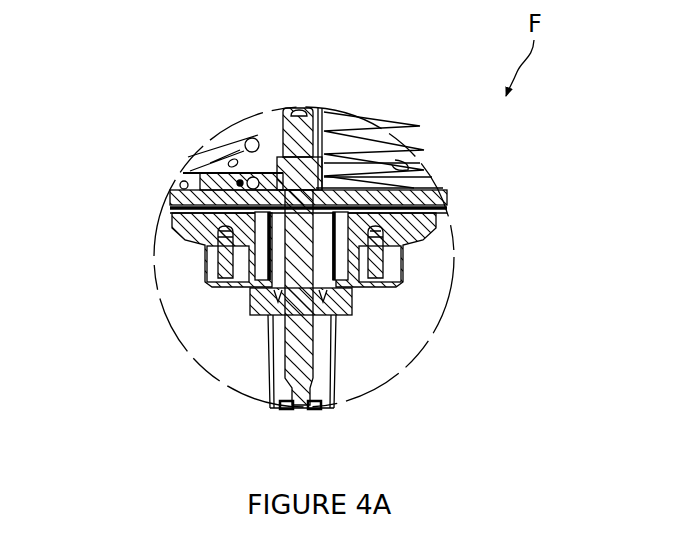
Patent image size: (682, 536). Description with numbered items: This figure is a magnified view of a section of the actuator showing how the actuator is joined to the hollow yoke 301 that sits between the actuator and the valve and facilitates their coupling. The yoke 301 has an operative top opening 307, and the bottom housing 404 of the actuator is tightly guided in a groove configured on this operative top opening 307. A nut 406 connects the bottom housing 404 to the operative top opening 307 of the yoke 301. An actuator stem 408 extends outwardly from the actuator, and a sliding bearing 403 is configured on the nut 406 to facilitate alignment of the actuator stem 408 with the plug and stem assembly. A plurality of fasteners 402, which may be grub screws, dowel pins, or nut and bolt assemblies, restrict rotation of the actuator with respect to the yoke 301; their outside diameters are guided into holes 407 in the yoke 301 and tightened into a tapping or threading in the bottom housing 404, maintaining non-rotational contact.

The sliding bearing 403 is at (310, 243).
The holes 407 is at (380, 243).
The yoke 301 is at (200, 274).
The nut 406 is at (248, 312).
The actuator stem 408 is at (300, 368).
The bottom housing 404 is at (437, 223).
The fasteners 402 is at (345, 233).
The operative top opening 307 is at (352, 270).